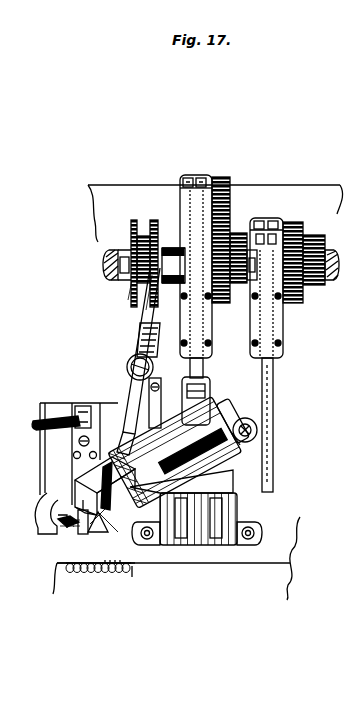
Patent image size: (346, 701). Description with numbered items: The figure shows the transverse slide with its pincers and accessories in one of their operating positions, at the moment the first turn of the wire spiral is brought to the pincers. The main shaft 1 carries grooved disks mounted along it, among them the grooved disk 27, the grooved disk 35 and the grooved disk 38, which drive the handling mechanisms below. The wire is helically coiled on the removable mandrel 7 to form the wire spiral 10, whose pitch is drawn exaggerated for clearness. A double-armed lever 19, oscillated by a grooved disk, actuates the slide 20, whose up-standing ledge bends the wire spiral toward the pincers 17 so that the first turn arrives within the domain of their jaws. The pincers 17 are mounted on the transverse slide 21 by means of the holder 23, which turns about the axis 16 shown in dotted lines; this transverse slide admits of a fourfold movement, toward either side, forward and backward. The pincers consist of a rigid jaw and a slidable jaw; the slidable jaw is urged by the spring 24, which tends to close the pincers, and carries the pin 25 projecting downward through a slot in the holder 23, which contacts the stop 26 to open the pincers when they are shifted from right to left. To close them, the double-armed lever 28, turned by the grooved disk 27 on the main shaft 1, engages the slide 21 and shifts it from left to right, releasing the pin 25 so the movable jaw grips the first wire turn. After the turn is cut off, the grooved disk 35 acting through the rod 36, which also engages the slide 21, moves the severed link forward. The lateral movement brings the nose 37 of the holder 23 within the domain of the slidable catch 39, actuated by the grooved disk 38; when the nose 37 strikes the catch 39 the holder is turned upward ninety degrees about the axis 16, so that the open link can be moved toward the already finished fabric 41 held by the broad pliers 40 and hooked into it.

The main shaft 1 is at (113, 279).
The removable mandrel 7 is at (64, 527).
The wire spiral 10 is at (80, 530).
The axis 16 is at (123, 488).
The pincers 17 is at (103, 525).
The double-armed lever 19 is at (40, 431).
The slide 20 is at (80, 433).
The transverse slide 21 is at (228, 487).
The holder 23 is at (243, 420).
The spring 24 is at (206, 408).
The pin 25 is at (186, 398).
The stop 26 is at (158, 388).
The grooved disk 27 is at (151, 228).
The double-armed lever 28 is at (129, 373).
The grooved disk 35 is at (245, 233).
The rod 36 is at (193, 224).
The nose 37 is at (236, 444).
The grooved disk 38 is at (300, 230).
The slidable catch 39 is at (275, 488).
The broad pliers 40 is at (79, 573).
The finished fabric 41 is at (102, 574).